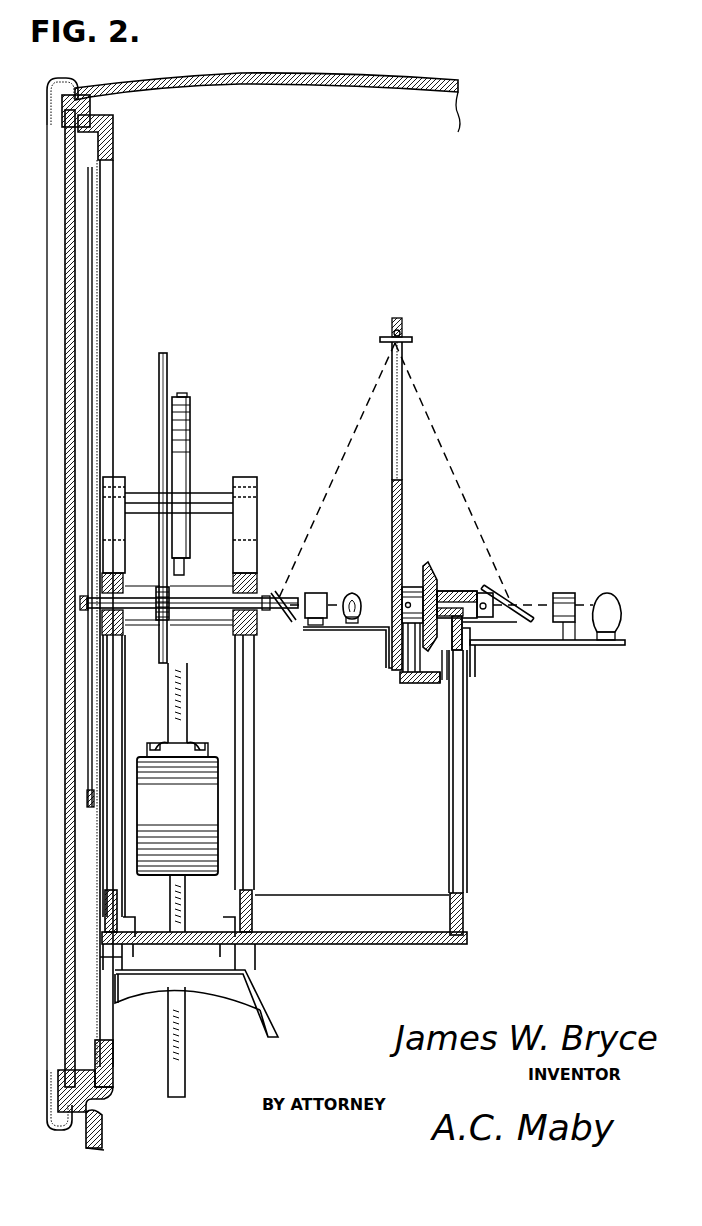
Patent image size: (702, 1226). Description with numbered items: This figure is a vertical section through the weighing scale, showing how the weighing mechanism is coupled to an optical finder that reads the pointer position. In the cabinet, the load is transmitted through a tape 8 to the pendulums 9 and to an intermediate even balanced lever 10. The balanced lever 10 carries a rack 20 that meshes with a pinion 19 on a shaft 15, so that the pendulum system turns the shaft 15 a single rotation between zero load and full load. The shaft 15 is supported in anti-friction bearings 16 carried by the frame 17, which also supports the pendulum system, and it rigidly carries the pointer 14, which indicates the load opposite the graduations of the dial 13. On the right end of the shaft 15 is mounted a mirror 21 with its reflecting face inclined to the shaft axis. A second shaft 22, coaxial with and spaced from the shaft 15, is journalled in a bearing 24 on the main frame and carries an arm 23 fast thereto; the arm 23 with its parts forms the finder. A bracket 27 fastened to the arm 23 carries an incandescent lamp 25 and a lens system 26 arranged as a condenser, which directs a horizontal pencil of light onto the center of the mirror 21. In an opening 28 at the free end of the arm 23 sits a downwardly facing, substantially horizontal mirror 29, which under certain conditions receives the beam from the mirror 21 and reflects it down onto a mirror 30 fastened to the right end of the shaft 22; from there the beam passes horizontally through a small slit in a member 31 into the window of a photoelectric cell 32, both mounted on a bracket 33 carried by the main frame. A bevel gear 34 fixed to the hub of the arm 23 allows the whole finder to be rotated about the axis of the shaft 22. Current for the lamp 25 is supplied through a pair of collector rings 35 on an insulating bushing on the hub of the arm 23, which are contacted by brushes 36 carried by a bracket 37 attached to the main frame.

The tape 8 is at (185, 1063).
The pendulums 9 is at (157, 876).
The intermediate even balanced lever 10 is at (190, 437).
The dial 13 is at (102, 182).
The pointer 14 is at (90, 268).
The shaft 15 is at (206, 600).
The anti-friction bearings 16 is at (125, 612).
The frame 17 is at (120, 483).
The pinion 19 is at (156, 592).
The rack 20 is at (162, 535).
The mirror 21 is at (281, 620).
The shaft 22 is at (455, 600).
The arm 23 is at (392, 516).
The bearing 24 is at (480, 586).
The incandescent lamp 25 is at (356, 594).
The lens system 26 is at (320, 596).
The bracket 27 is at (345, 630).
The opening 28 is at (397, 472).
The mirror 29 is at (412, 340).
The mirror 30 is at (508, 612).
The member 31 is at (571, 598).
The photoelectric cell 32 is at (612, 605).
The bracket 33 is at (547, 645).
The bevel gear 34 is at (432, 572).
The collector rings 35 is at (412, 587).
The brushes 36 is at (408, 665).
The bracket 37 is at (437, 685).